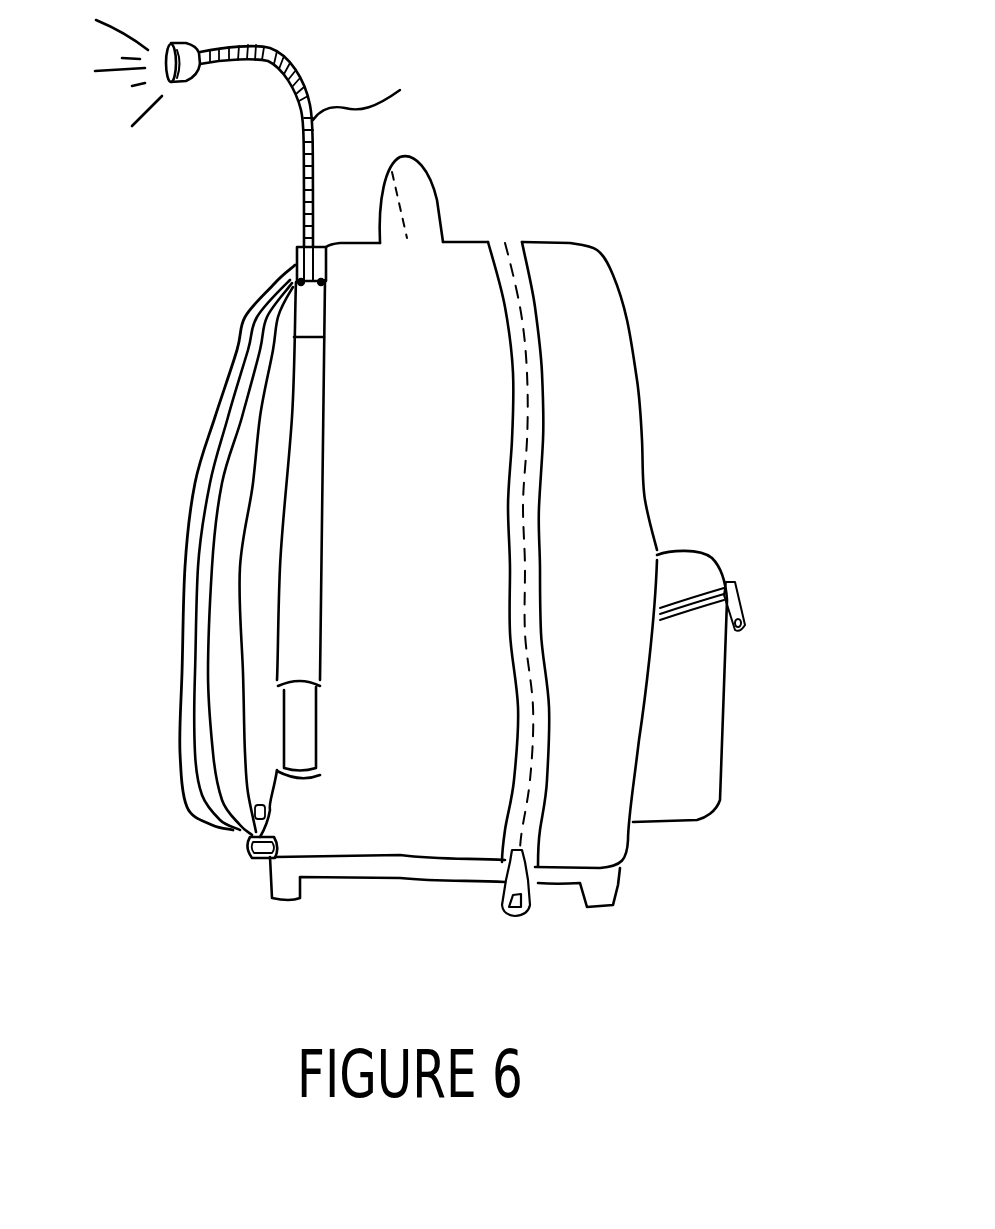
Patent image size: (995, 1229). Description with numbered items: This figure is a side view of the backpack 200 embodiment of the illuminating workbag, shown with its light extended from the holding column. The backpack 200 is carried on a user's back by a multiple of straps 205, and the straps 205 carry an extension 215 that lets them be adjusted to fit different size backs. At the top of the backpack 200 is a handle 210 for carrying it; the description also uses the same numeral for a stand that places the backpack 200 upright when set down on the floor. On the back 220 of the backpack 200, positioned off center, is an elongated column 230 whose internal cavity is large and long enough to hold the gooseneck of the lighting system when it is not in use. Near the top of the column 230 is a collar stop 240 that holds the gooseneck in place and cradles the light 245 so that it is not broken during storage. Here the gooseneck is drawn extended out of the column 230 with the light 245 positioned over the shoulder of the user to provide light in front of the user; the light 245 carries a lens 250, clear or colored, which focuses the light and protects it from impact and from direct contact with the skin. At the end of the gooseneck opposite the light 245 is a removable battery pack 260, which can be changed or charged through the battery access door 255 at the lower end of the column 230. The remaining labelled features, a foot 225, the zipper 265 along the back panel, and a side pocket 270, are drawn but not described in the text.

The backpack 200 is at (660, 255).
The straps 205 is at (193, 760).
The handle 210 is at (428, 216).
The extension 215 is at (248, 850).
The back 220 is at (360, 803).
The foot 225 is at (622, 892).
The elongated column 230 is at (315, 508).
The collar stop 240 is at (326, 283).
The light 245 is at (183, 81).
The lens 250 is at (160, 82).
The battery access door 255 is at (308, 725).
The battery pack 260 is at (317, 315).
The zipper 265 is at (525, 246).
The side pocket 270 is at (697, 740).